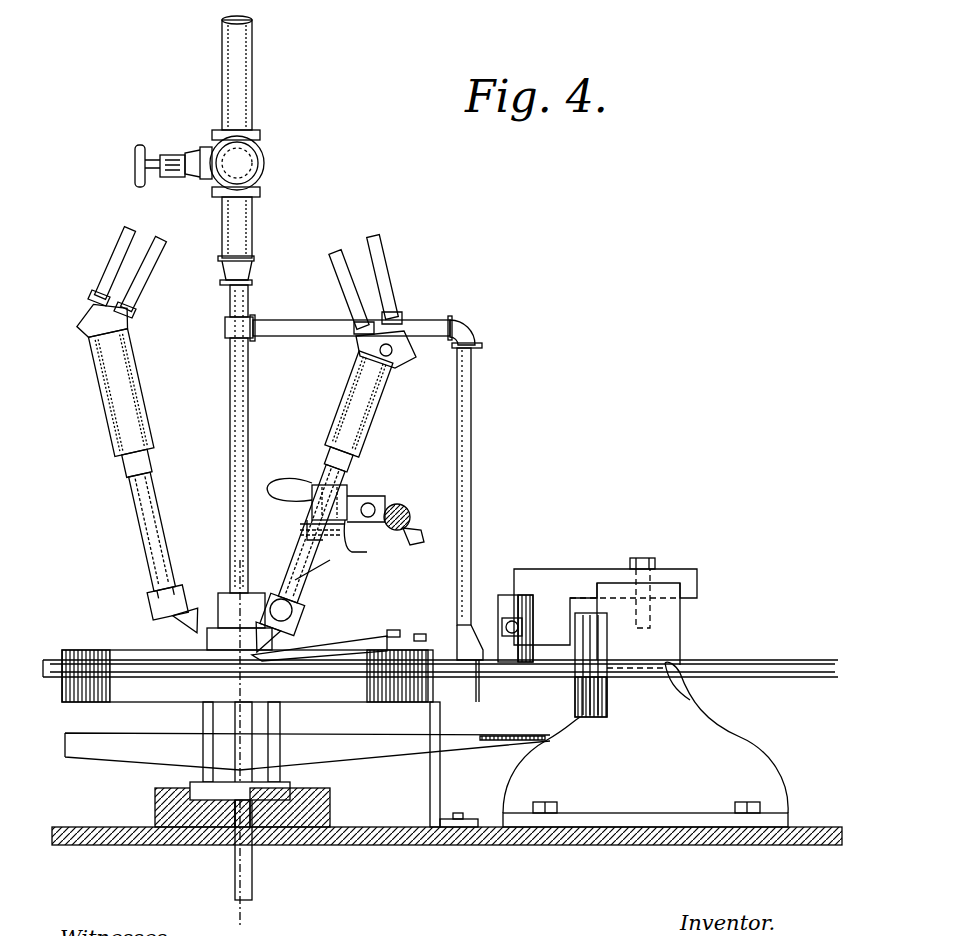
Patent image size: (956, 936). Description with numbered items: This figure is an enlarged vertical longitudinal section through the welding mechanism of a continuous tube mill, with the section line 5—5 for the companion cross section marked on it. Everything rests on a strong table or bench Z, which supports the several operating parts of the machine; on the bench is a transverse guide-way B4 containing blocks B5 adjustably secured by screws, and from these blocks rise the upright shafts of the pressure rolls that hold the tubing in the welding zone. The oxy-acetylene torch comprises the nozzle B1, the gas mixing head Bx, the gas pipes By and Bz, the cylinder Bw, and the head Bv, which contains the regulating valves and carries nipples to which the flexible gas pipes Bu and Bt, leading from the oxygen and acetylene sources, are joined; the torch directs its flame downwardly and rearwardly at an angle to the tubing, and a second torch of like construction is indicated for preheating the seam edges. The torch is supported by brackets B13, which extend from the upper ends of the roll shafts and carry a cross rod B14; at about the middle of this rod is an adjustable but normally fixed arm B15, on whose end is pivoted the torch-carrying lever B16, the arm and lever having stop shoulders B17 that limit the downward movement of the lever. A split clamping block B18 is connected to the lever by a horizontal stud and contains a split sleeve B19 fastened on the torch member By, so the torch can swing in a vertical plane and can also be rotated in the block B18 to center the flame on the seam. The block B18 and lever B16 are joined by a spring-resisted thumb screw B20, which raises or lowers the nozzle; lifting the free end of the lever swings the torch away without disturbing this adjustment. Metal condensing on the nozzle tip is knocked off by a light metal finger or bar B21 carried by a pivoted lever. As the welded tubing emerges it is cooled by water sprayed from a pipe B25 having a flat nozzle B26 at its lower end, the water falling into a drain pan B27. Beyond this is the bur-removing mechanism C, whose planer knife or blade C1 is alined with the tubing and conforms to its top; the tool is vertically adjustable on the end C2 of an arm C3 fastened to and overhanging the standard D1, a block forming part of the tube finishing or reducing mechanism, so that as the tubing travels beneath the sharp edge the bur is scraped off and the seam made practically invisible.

The supply pipe 5 is at (232, 410).
The table or bench Z is at (417, 845).
The pipe B25 is at (472, 470).
The flat nozzle B26 is at (490, 689).
The light metal finger or bar B21 is at (336, 640).
The drain pan B27 is at (388, 762).
The transverse guide-way B4 is at (155, 811).
The blocks B5 is at (330, 808).
The head Bv is at (100, 290).
The cylinder Bw is at (120, 405).
The gas mixing head Bx is at (150, 612).
The nozzle B1 is at (190, 628).
The flexible gas pipe Bu is at (345, 290).
The flexible gas pipe Bt is at (385, 278).
The split sleeve B19 is at (318, 488).
The torch-carrying lever B16 is at (345, 500).
The cross rod B14 is at (412, 515).
The adjustable but normally fixed arm B15 is at (402, 505).
The brackets B13 is at (398, 537).
The split clamping block B18 is at (312, 516).
The gas pipe By is at (310, 545).
The stop shoulders B17 is at (355, 550).
The spring resisted thumb screw B20 is at (292, 528).
The gas pipe Bz is at (388, 540).
The bur-removing mechanism C is at (591, 514).
The planer knife, tool or blade C1 is at (502, 600).
The end of arm C2 is at (541, 582).
The arm C3 is at (621, 584).
The block or standard D1 is at (684, 636).